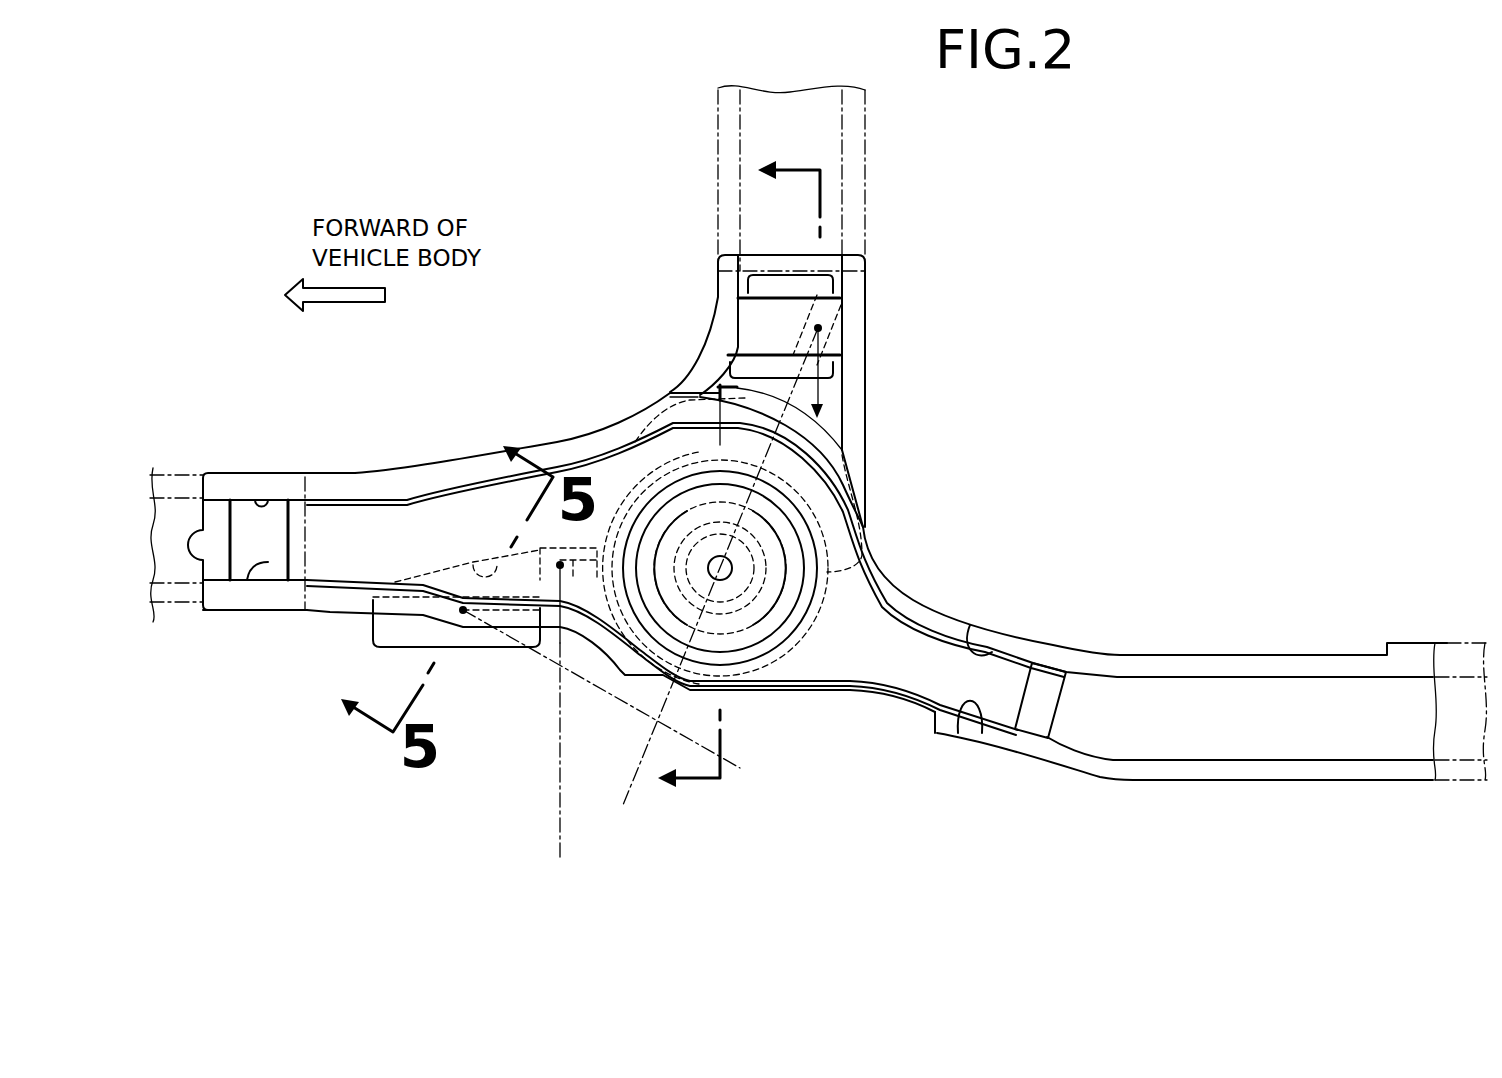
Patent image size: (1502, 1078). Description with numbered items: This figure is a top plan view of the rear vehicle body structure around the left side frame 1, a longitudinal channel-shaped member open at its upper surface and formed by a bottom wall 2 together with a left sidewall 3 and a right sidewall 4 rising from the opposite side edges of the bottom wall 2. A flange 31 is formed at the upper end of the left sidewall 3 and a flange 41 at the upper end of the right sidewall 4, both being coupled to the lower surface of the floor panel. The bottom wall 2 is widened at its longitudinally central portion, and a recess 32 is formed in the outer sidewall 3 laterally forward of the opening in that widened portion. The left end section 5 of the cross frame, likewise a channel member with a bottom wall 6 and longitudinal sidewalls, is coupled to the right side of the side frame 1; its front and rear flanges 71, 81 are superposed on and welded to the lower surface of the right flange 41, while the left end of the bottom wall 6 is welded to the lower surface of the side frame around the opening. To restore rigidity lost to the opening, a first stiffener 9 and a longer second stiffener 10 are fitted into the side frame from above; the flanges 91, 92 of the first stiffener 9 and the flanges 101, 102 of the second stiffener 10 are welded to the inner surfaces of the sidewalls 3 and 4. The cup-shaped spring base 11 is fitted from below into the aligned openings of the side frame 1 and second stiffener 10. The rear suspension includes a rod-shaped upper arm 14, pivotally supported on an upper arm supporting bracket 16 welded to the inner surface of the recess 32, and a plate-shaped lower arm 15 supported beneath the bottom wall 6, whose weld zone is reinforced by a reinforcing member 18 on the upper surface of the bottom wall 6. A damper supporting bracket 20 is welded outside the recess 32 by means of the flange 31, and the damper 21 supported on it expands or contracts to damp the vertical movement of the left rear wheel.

The side frame 1 is at (1056, 634).
The bottom wall 2 is at (1215, 700).
The left sidewall 3 is at (863, 778).
The flange 31 is at (340, 608).
The recess 32 is at (470, 560).
The right sidewall 4 is at (741, 479).
The flange 41 is at (918, 605).
The left end section of cross frame 5 is at (872, 428).
The bottom wall 6 is at (775, 265).
The flange 71 is at (713, 337).
The flange 81 is at (856, 318).
The first stiffener 9 is at (1032, 694).
The flange 91 is at (960, 735).
The flange 92 is at (978, 627).
The second stiffener 10 is at (226, 527).
The flange 101 is at (268, 566).
The flange 102 is at (270, 500).
The spring base 11 is at (820, 637).
The upper arm 14 is at (556, 778).
The lower arm 15 is at (627, 795).
The upper arm supporting bracket 16 is at (730, 541).
The reinforcing member 18 is at (768, 318).
The damper supporting bracket 20 is at (468, 648).
The damper 21 is at (603, 700).